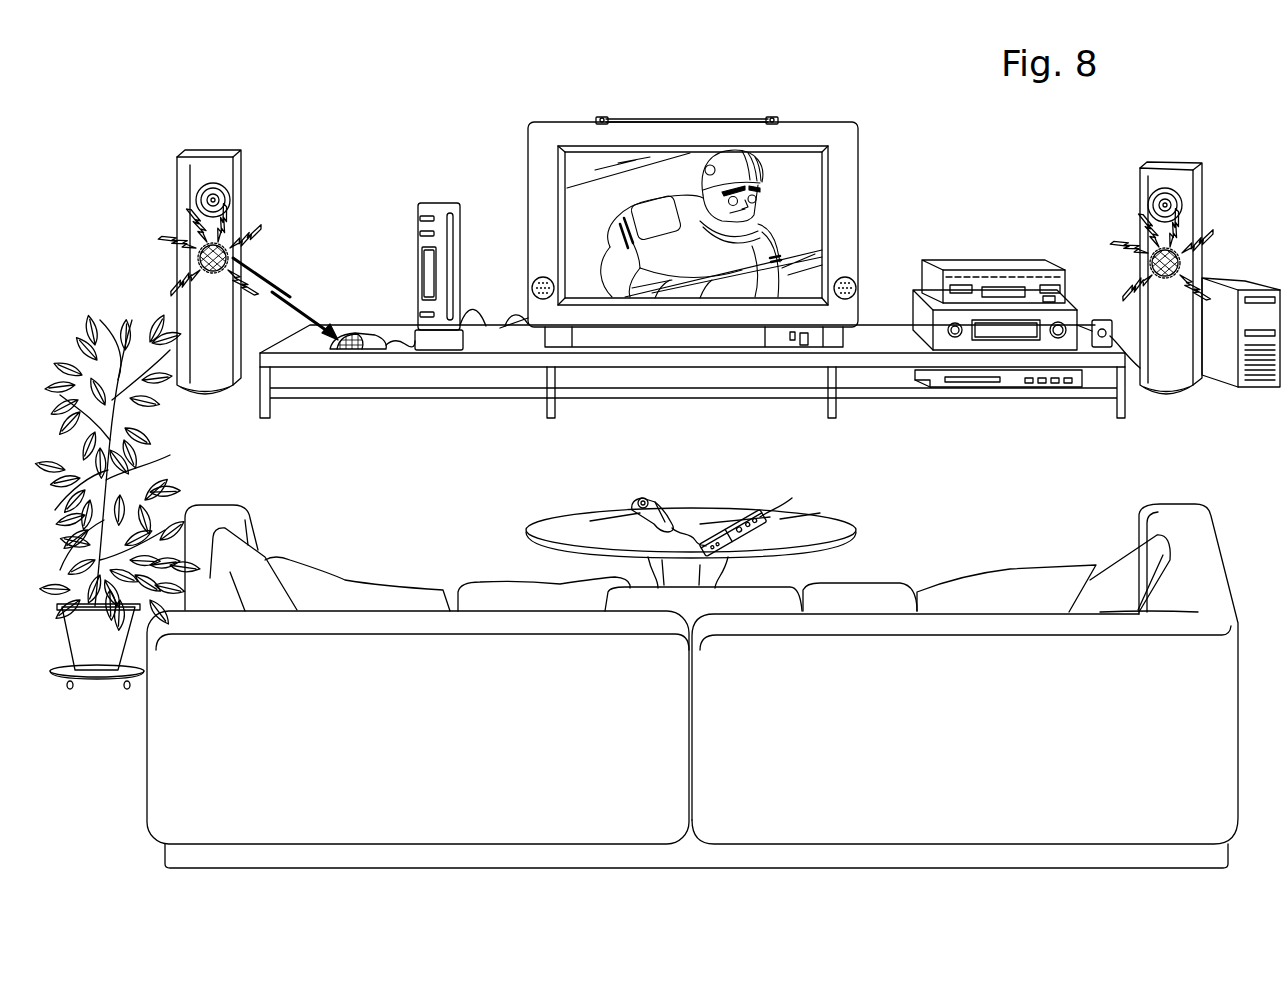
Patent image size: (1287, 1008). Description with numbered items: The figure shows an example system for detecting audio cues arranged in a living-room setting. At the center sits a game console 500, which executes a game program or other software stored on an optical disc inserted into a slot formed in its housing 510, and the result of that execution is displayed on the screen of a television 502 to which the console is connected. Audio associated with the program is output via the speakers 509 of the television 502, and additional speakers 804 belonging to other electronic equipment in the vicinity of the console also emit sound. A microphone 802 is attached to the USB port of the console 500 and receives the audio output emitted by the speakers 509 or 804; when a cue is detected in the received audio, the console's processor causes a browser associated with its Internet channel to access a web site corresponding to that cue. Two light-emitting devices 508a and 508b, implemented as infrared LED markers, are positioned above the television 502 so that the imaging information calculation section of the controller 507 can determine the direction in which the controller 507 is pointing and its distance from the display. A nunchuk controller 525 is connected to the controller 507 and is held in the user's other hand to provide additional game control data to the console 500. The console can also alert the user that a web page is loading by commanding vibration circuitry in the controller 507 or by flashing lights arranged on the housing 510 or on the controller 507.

The game console 500 is at (438, 226).
The television 502 is at (695, 196).
The controller 507 is at (762, 516).
The light-emitting device 508a is at (600, 116).
The light-emitting device 508b is at (773, 115).
The speakers 509 is at (534, 281).
The housing 510 is at (418, 214).
The nunchuk controller 525 is at (634, 498).
The microphone 802 is at (357, 327).
The speakers 804 is at (207, 160).